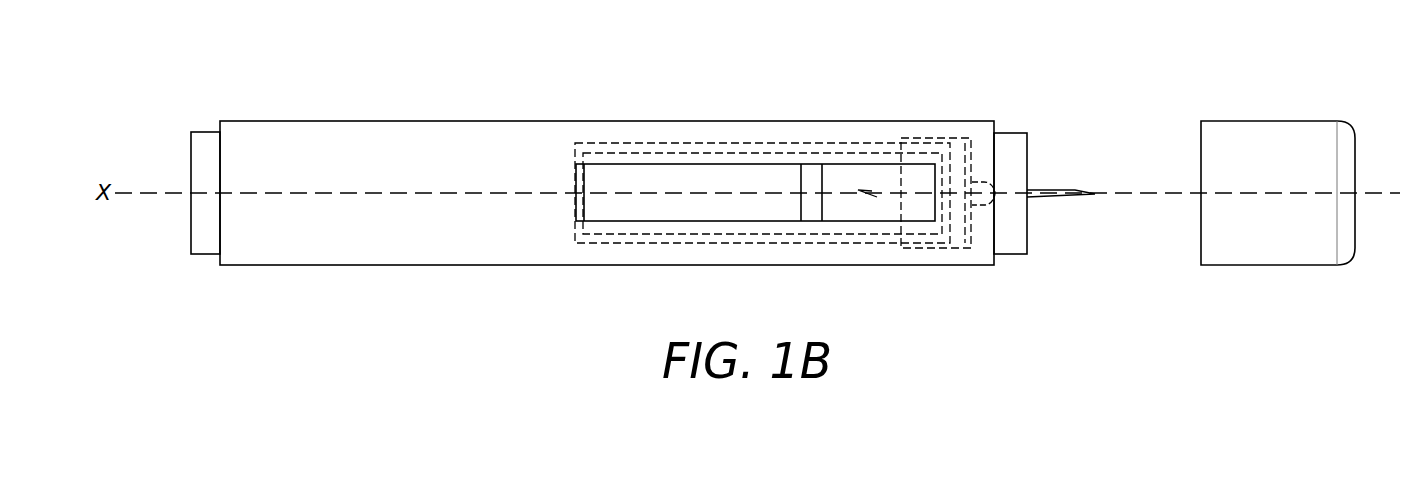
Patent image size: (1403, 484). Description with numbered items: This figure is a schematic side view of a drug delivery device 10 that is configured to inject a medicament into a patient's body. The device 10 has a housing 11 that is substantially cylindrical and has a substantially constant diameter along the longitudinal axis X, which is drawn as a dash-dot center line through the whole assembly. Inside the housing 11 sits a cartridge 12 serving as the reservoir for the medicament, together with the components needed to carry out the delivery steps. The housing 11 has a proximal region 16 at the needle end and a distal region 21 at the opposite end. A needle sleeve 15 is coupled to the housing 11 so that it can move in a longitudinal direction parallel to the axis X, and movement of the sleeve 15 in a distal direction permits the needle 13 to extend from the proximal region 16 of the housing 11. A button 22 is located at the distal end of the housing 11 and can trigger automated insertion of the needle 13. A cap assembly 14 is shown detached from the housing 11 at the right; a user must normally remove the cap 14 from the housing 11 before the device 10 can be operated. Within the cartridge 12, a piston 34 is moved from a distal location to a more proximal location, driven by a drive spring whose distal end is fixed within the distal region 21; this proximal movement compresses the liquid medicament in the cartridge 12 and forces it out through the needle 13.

The drug delivery device 10 is at (953, 79).
The housing 11 is at (806, 131).
The cartridge 12 is at (645, 246).
The needle 13 is at (1069, 188).
The cap assembly 14 is at (1270, 131).
The needle sleeve 15 is at (1018, 144).
The proximal region 16 is at (981, 256).
The distal region 21 is at (240, 258).
The button 22 is at (205, 245).
The piston 34 is at (812, 213).